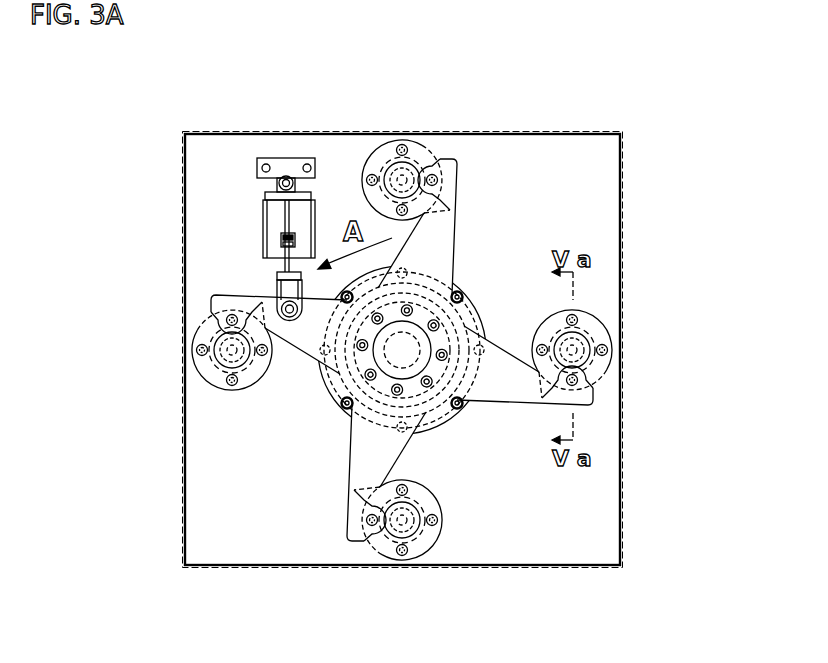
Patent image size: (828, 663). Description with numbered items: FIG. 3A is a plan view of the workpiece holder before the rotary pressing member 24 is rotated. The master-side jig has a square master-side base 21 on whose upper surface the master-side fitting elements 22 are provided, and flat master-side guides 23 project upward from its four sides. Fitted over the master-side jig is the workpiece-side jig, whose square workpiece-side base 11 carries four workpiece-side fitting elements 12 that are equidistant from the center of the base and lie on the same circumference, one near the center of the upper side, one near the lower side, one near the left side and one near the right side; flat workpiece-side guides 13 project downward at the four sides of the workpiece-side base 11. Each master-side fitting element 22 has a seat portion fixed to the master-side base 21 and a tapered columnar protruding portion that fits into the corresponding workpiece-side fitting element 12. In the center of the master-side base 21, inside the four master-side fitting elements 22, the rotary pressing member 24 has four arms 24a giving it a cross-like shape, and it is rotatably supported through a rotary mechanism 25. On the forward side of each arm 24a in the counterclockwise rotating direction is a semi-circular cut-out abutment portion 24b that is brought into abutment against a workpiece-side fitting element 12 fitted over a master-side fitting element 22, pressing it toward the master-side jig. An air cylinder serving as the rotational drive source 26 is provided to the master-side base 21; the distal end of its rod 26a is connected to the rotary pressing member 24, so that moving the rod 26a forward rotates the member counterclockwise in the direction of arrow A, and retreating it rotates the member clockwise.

The workpiece-side base 11 is at (409, 348).
The workpiece-side fitting element 12 is at (388, 139).
The workpiece-side guide 13 is at (143, 140).
The master-side base 21 is at (385, 346).
The master-side fitting element 22 is at (383, 165).
The master-side guide 23 is at (540, 133).
The rotary pressing member 24 is at (326, 383).
The arm 24a is at (456, 162).
The abutment portion 24b is at (427, 160).
The rotary mechanism 25 is at (317, 358).
The rotational drive source 26 is at (262, 210).
The rod 26a is at (264, 262).